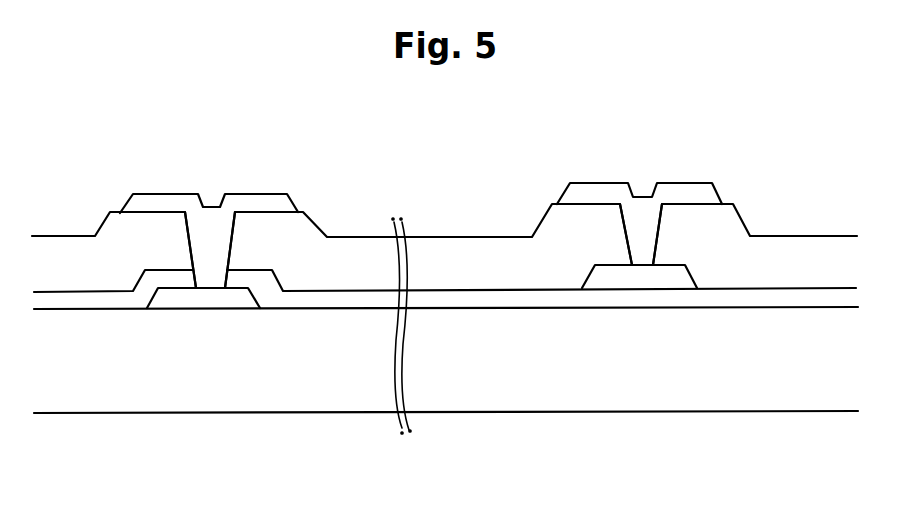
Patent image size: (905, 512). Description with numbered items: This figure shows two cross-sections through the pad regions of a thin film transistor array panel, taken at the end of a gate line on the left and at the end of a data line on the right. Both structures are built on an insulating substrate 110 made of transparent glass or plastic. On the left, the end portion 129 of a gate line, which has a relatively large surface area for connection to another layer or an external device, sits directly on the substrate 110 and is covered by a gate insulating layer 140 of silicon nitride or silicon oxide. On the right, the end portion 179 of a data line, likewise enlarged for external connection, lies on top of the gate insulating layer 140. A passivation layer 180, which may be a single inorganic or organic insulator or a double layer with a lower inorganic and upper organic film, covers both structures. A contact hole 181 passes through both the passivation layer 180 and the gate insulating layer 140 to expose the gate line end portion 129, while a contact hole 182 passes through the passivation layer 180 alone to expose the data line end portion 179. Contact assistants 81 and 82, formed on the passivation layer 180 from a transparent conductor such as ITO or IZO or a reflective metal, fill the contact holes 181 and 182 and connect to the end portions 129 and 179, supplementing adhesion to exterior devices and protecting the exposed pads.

The insulating substrate 110 is at (145, 403).
The end portion of gate line 129 is at (205, 300).
The gate insulating layer 140 is at (288, 300).
The end portion of data line 179 is at (618, 282).
The passivation layer 180 is at (493, 270).
The contact hole 181 is at (213, 213).
The contact hole 182 is at (643, 203).
The contact assistant 81 is at (266, 195).
The contact assistant 82 is at (697, 187).